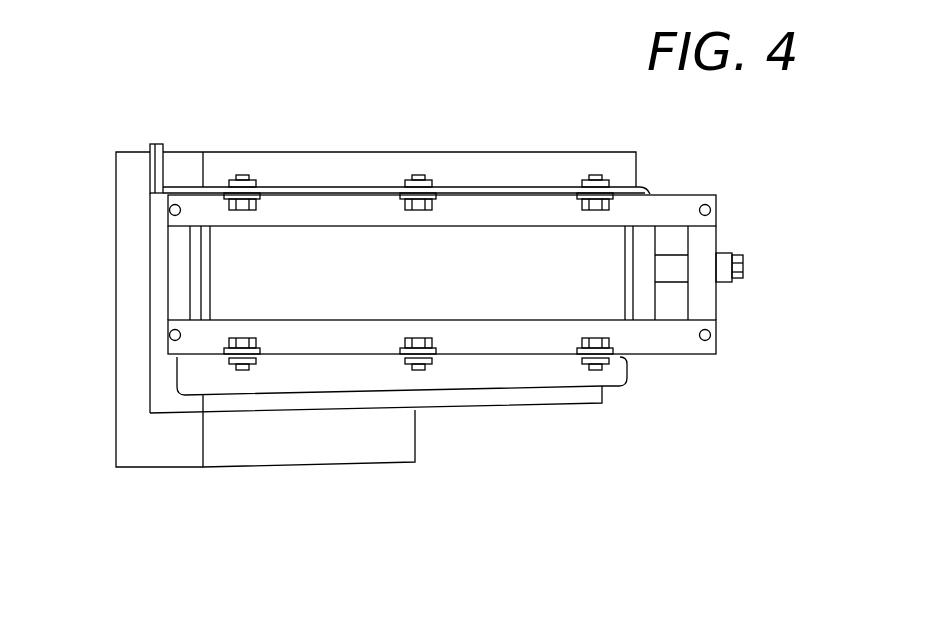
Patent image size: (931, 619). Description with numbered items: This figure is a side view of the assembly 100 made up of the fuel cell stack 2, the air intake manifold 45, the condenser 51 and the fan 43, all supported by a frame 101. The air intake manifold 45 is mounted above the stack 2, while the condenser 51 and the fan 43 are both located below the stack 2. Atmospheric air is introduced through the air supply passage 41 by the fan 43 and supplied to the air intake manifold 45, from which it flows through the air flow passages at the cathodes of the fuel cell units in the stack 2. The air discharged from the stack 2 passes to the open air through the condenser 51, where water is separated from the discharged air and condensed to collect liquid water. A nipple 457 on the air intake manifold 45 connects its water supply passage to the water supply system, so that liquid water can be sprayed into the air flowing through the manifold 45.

The assembly 100 is at (566, 118).
The air supply passage 41 is at (116, 228).
The fan 43 is at (415, 433).
The air intake manifold 45 is at (330, 152).
The frame 101 is at (688, 195).
The fuel cell stack 2 is at (340, 284).
The condenser 51 is at (508, 378).
The nipple 457 is at (745, 265).